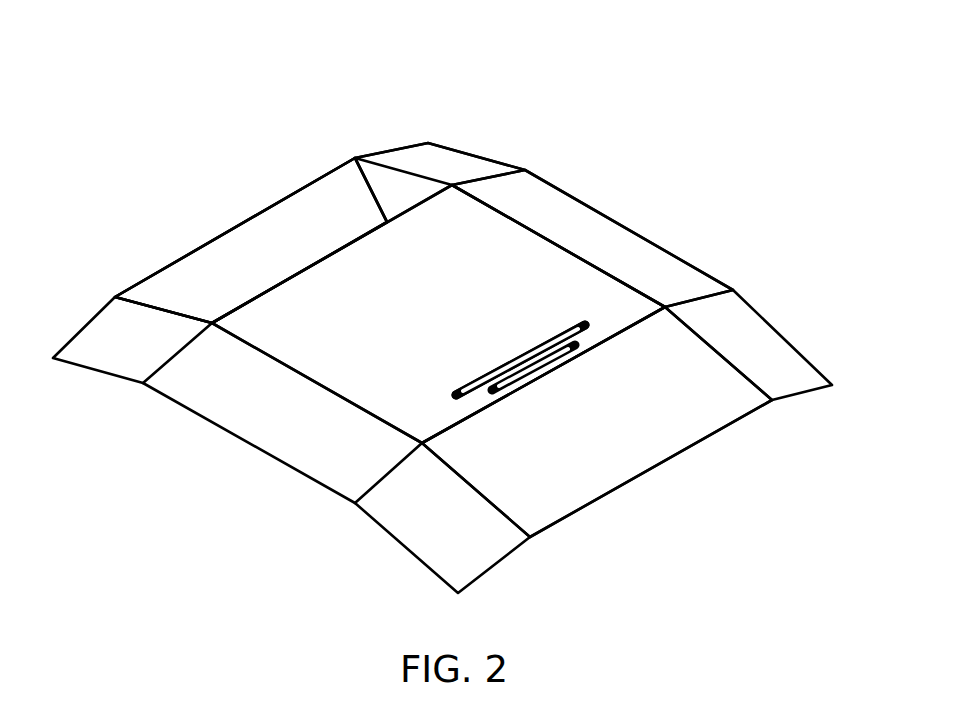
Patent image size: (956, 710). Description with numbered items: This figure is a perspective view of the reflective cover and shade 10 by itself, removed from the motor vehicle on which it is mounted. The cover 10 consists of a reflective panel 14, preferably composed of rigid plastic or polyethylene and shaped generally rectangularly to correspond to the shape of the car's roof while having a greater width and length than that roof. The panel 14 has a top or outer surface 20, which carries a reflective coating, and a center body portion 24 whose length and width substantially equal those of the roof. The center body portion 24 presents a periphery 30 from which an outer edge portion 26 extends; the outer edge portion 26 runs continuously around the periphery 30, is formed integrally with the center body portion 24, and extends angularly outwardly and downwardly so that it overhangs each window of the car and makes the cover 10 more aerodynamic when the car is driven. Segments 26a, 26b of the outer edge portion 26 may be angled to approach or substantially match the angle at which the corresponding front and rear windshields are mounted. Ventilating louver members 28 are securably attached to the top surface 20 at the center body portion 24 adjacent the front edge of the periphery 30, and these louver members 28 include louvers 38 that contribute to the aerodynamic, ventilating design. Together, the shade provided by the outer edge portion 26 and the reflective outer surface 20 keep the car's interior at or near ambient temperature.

The reflective cover and shade 10 is at (497, 138).
The reflective panel 14 is at (608, 212).
The top or outer surface 20 is at (452, 313).
The center body portion 24 is at (437, 235).
The outer edge portion 26 is at (180, 288).
The segment of outer edge portion 26a is at (597, 422).
The segment of outer edge portion 26b is at (251, 240).
The ventilating louver members 28 is at (603, 322).
The periphery 30 is at (387, 222).
The louvers 38 is at (558, 337).